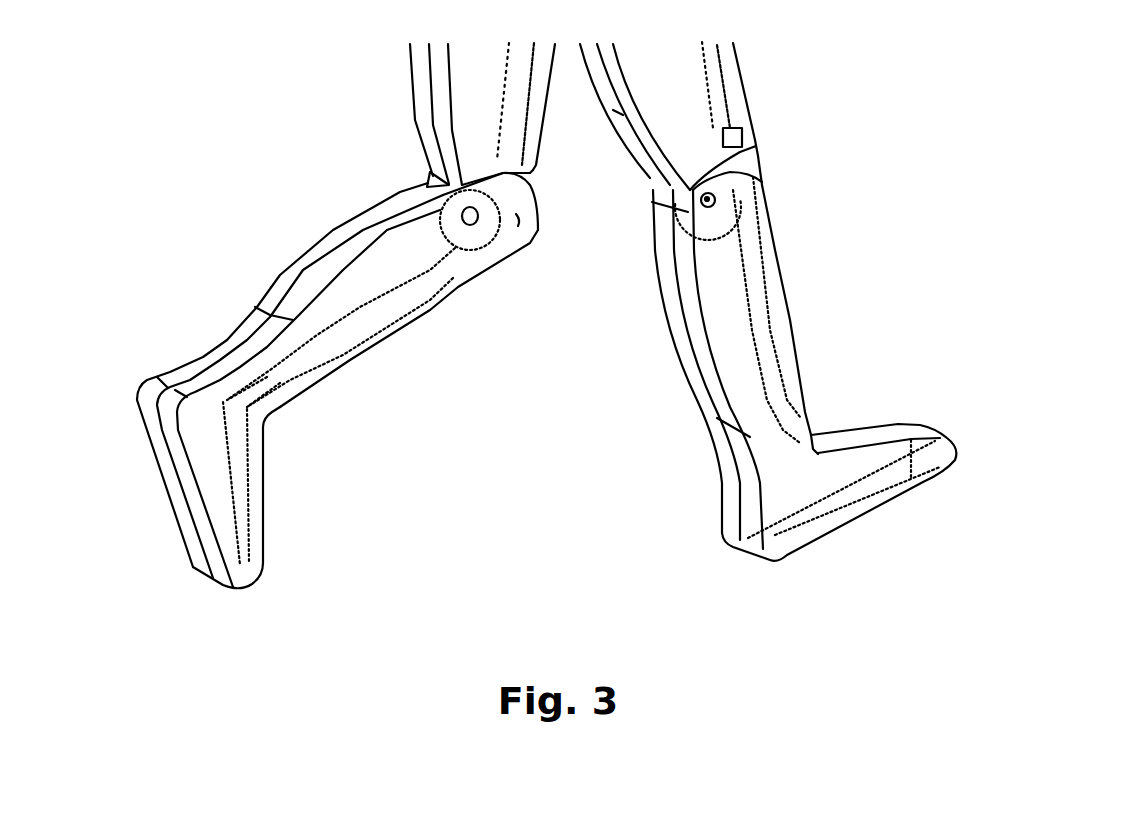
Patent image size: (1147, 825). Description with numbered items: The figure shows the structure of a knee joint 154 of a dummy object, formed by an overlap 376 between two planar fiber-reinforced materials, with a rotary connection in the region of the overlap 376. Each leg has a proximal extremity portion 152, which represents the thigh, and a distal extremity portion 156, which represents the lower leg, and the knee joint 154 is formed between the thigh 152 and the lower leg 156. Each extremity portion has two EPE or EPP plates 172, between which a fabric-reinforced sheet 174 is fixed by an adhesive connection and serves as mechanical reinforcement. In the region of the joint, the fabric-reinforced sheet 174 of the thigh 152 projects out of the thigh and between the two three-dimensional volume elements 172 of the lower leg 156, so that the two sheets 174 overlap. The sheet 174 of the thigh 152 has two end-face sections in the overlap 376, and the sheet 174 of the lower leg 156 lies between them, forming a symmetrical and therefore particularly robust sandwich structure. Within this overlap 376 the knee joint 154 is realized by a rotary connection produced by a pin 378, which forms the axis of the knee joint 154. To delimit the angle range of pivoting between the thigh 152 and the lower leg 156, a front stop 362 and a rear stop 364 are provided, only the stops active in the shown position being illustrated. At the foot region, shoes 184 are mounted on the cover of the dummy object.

The proximal extremity portion 152 is at (478, 70).
The knee joint 154 is at (510, 265).
The distal extremity portion 156 is at (375, 412).
The EPE or EPP plates 172 is at (322, 280).
The fabric-reinforced sheet 174 is at (430, 92).
The shoes 184 is at (181, 511).
The front stop 362 is at (743, 135).
The rear stop 364 is at (427, 172).
The overlap 376 is at (448, 230).
The pin 378 is at (762, 181).